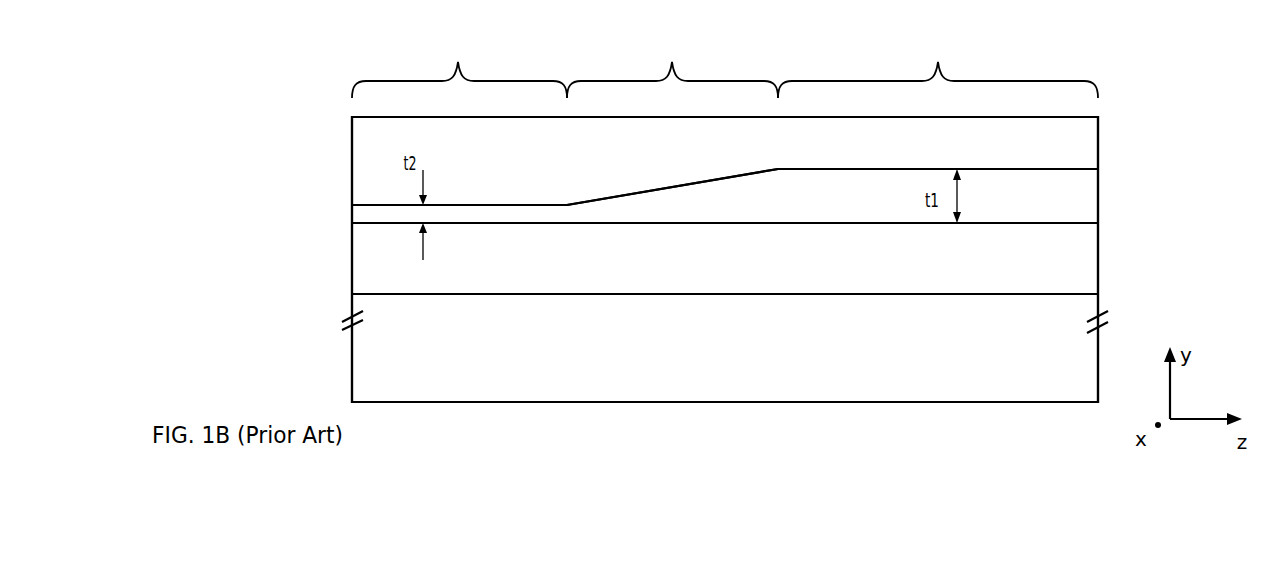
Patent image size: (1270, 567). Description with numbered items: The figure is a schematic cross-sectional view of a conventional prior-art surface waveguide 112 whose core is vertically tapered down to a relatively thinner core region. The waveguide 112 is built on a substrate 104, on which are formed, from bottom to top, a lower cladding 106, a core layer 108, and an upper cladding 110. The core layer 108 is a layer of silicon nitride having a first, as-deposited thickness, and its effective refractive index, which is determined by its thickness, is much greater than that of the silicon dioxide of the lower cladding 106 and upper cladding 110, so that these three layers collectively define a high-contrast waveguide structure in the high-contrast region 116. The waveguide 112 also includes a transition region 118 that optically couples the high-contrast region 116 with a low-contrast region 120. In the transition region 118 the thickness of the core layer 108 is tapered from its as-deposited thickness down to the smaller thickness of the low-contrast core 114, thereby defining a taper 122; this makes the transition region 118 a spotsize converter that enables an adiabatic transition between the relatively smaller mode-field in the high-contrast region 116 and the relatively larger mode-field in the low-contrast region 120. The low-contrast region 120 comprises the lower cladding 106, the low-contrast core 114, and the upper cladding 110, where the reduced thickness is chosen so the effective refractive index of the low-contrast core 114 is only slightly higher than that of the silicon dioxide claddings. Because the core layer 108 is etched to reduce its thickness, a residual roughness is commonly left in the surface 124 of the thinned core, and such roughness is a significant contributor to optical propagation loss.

The substrate 104 is at (1081, 386).
The lower cladding 106 is at (1081, 278).
The core layer 108 is at (1081, 208).
The upper cladding 110 is at (1081, 156).
The waveguide 112 is at (286, 170).
The low-contrast core 114 is at (458, 213).
The high-contrast region 116 is at (938, 64).
The transition region 118 is at (672, 64).
The low-contrast region 120 is at (459, 64).
The taper 122 is at (601, 182).
The surface 124 is at (488, 196).